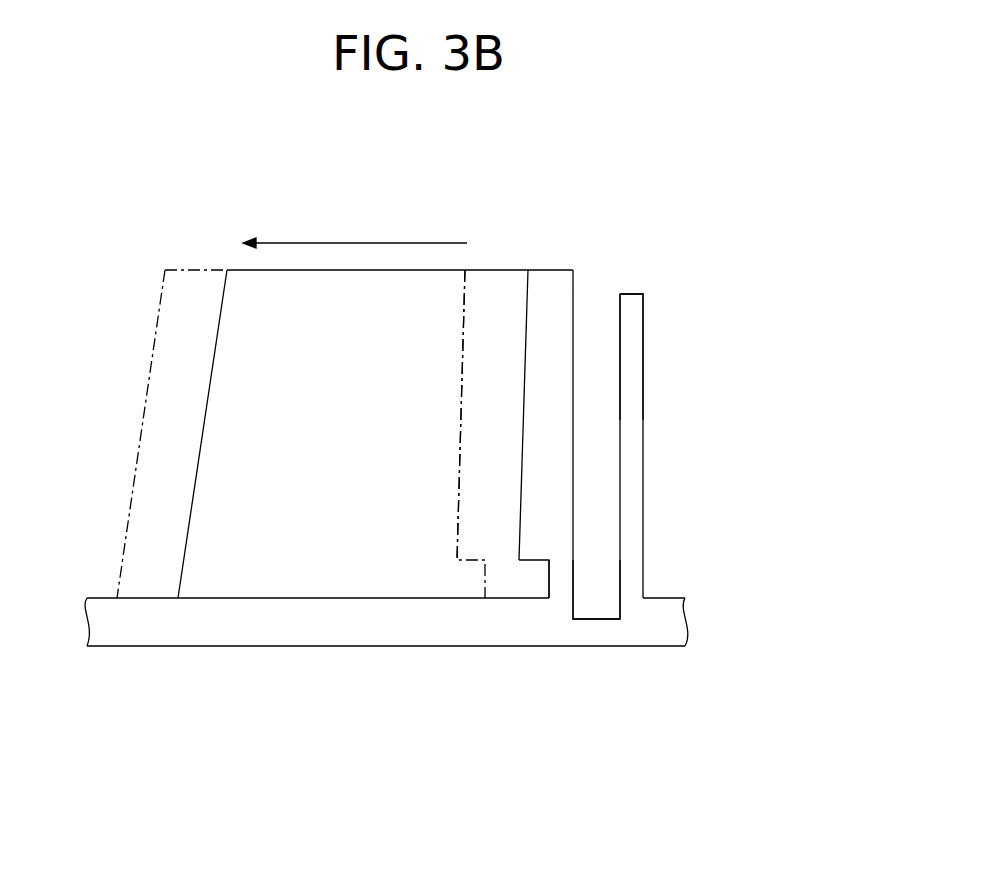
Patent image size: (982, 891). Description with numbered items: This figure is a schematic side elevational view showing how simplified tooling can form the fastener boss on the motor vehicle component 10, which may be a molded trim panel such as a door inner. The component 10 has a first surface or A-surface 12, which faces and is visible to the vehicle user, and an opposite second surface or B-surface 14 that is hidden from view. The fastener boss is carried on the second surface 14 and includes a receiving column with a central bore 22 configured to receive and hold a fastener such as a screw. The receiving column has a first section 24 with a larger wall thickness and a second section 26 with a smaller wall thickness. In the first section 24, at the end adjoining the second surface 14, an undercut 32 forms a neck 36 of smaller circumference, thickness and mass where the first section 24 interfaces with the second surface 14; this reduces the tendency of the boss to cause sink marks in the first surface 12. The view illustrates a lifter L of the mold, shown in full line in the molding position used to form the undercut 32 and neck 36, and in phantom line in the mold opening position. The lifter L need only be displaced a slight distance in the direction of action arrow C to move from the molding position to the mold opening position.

The motor vehicle component 10 is at (748, 460).
The first surface 12 is at (189, 647).
The second surface 14 is at (277, 598).
The central bore 22 is at (603, 540).
The first section 24 is at (552, 302).
The second section 26 is at (637, 377).
The undercut 32 is at (521, 579).
The neck 36 is at (548, 583).
The lifter L is at (495, 298).
The action arrow C is at (344, 243).